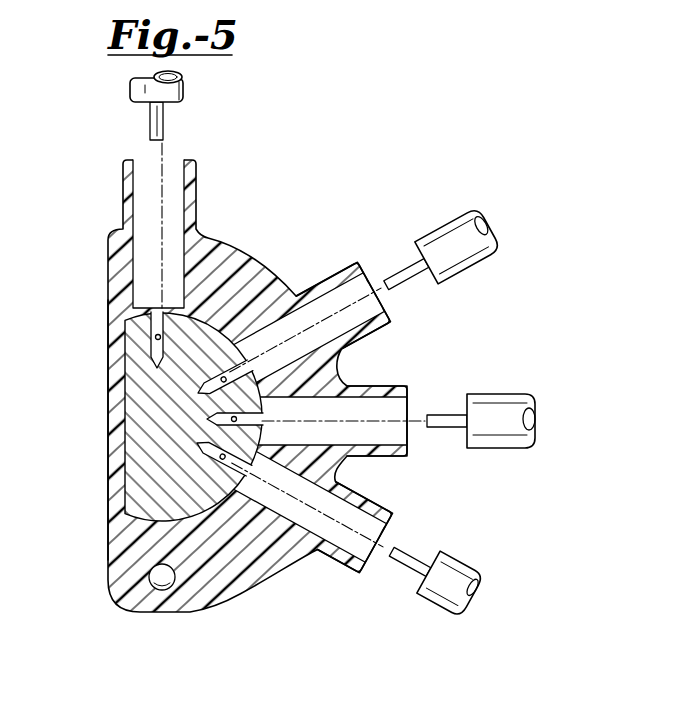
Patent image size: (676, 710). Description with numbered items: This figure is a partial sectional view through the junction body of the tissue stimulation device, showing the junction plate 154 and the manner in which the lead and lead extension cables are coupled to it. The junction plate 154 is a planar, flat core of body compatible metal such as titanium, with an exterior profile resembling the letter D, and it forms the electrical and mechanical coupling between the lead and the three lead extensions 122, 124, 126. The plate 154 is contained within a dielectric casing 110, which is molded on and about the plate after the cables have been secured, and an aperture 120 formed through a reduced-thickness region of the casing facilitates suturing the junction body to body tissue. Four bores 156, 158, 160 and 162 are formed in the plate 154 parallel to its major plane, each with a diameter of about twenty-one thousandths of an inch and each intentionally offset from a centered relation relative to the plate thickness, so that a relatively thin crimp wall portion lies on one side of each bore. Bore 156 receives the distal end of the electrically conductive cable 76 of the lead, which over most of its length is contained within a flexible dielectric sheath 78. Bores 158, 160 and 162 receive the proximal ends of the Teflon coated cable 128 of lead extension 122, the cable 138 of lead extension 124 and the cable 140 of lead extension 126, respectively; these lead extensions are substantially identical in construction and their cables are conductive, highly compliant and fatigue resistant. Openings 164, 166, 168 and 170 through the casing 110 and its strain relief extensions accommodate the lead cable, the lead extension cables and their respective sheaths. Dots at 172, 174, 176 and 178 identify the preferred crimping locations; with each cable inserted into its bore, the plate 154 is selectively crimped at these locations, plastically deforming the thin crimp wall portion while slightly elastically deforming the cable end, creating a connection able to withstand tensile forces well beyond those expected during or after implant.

The electrically conductive cable 76 is at (166, 131).
The dielectric sheath 78 is at (130, 88).
The dielectric casing 110 is at (222, 240).
The aperture 120 is at (168, 589).
The lead extension 122 is at (463, 268).
The lead extension 124 is at (493, 446).
The lead extension 126 is at (443, 611).
The Teflon coated cable 128 is at (398, 273).
The cable 138 is at (442, 415).
The cable 140 is at (402, 553).
The junction plate 154 is at (112, 463).
The bore 156 is at (157, 310).
The bore 158 is at (303, 343).
The bore 160 is at (266, 420).
The bore 162 is at (245, 468).
The opening 164 is at (182, 206).
The opening 166 is at (318, 290).
The opening 168 is at (367, 398).
The opening 170 is at (340, 565).
The crimping location 172 is at (155, 340).
The crimping location 174 is at (229, 370).
The crimping location 176 is at (207, 420).
The crimping location 178 is at (217, 458).